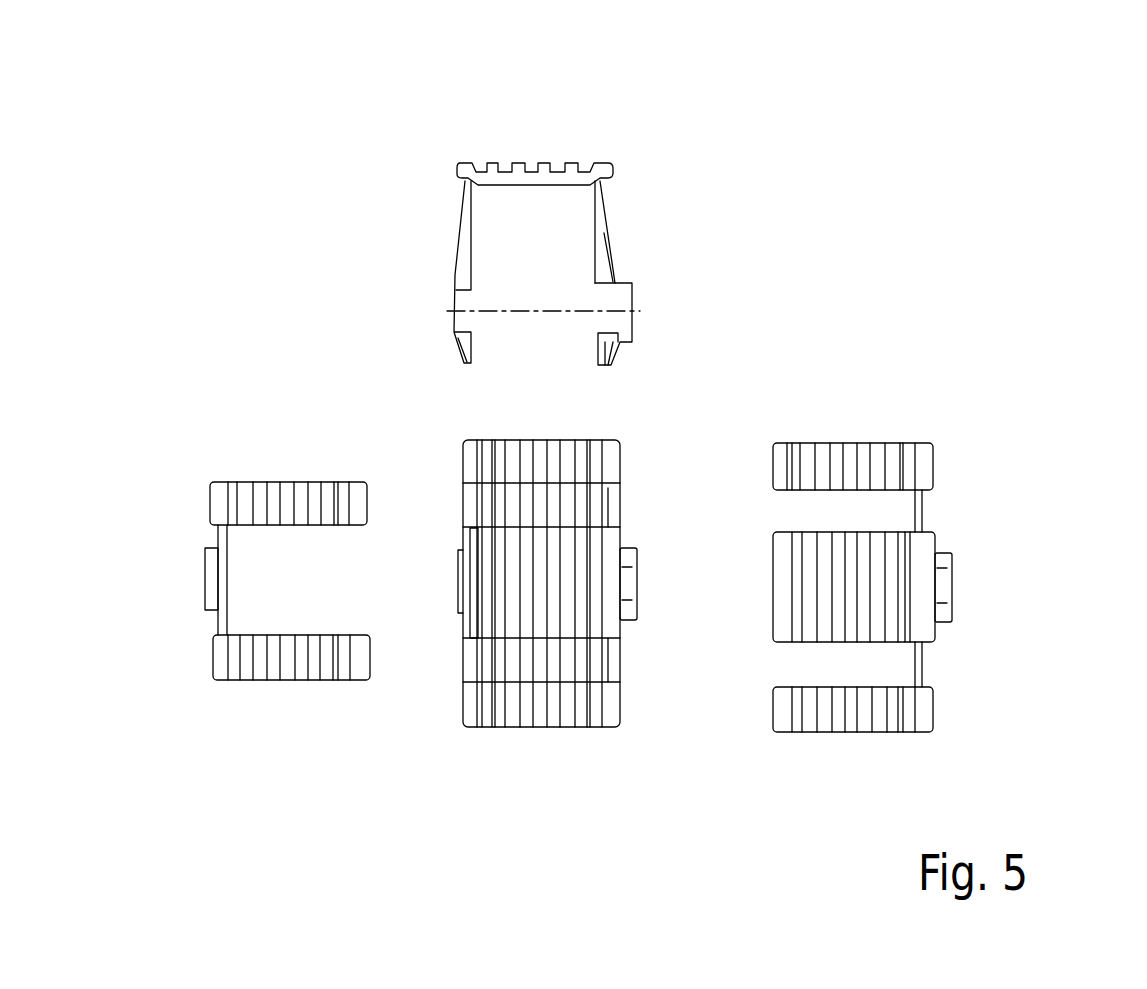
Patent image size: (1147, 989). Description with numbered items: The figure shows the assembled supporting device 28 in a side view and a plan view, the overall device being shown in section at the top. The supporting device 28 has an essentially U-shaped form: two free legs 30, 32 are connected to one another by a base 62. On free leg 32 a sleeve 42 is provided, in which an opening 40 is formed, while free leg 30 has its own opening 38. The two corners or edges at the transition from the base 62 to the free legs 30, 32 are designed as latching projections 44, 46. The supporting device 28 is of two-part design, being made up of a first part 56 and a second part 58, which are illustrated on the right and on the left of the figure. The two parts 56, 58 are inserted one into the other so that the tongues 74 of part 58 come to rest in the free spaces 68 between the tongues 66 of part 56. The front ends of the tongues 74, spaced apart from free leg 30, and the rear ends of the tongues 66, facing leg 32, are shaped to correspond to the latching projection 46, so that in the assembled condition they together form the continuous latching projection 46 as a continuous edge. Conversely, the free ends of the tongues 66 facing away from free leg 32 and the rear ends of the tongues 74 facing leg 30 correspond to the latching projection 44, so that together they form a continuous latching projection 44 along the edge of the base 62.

The supporting device 28 is at (597, 142).
The free leg 30 is at (452, 265).
The free leg 32 is at (617, 263).
The opening 38 is at (462, 319).
The opening 40 is at (625, 305).
The sleeve 42 is at (635, 284).
The latching projection 44 is at (460, 165).
The latching projection 46 is at (617, 170).
The first part 56 is at (622, 448).
The second part 58 is at (462, 495).
The base 62 is at (528, 163).
The tongues 66 is at (883, 458).
The free spaces 68 is at (802, 517).
The tongues 74 is at (285, 660).